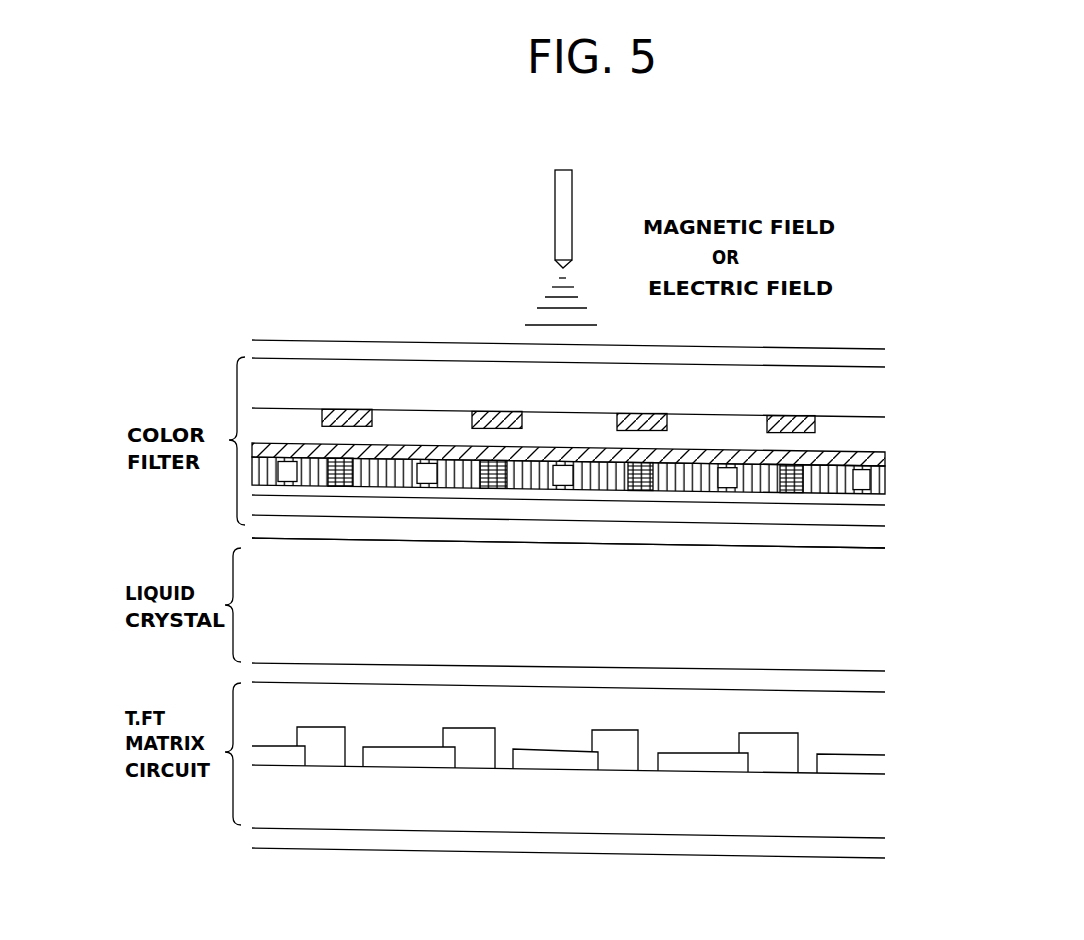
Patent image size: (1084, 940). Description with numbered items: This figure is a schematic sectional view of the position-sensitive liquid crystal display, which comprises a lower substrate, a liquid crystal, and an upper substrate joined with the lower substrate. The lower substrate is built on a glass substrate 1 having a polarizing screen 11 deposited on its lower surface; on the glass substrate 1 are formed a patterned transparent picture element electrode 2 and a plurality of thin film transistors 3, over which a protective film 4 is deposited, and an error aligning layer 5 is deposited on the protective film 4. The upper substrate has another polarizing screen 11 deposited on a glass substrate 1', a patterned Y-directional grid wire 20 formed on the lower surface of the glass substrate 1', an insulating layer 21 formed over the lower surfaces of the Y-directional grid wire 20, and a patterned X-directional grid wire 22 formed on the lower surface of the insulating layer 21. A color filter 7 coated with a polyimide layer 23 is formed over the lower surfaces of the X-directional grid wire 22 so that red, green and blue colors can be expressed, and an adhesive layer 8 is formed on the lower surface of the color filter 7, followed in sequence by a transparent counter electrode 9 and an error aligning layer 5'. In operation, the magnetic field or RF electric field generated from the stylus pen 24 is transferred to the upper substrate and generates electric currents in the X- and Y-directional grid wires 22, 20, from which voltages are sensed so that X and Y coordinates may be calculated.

The stylus pen 24 is at (572, 212).
The polarizing screen 11 is at (875, 362).
The glass substrate 1' is at (592, 377).
The Y-directional grid wire 20 is at (797, 417).
The insulating layer 21 is at (875, 437).
The X-directional grid wire 22 is at (875, 461).
The color filter 7 is at (886, 489).
The polyimide layer 23 is at (825, 493).
The adhesive layer 8 is at (793, 498).
The transparent counter electrode 9 is at (797, 520).
The error aligning layer 5' is at (583, 570).
The error aligning layer 5 is at (585, 678).
The protective film 4 is at (863, 710).
The thin film transistors 3 is at (798, 733).
The transparent picture element electrode 2 is at (863, 768).
The glass substrate 1 is at (590, 819).